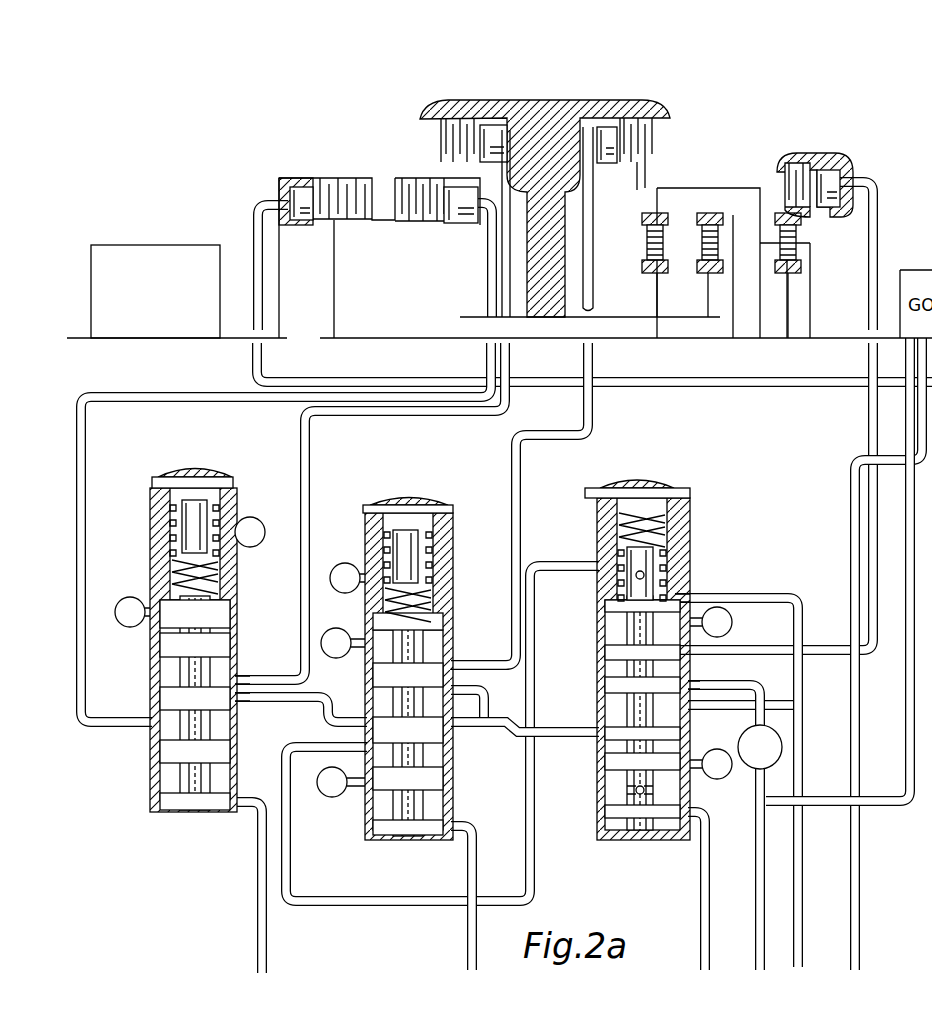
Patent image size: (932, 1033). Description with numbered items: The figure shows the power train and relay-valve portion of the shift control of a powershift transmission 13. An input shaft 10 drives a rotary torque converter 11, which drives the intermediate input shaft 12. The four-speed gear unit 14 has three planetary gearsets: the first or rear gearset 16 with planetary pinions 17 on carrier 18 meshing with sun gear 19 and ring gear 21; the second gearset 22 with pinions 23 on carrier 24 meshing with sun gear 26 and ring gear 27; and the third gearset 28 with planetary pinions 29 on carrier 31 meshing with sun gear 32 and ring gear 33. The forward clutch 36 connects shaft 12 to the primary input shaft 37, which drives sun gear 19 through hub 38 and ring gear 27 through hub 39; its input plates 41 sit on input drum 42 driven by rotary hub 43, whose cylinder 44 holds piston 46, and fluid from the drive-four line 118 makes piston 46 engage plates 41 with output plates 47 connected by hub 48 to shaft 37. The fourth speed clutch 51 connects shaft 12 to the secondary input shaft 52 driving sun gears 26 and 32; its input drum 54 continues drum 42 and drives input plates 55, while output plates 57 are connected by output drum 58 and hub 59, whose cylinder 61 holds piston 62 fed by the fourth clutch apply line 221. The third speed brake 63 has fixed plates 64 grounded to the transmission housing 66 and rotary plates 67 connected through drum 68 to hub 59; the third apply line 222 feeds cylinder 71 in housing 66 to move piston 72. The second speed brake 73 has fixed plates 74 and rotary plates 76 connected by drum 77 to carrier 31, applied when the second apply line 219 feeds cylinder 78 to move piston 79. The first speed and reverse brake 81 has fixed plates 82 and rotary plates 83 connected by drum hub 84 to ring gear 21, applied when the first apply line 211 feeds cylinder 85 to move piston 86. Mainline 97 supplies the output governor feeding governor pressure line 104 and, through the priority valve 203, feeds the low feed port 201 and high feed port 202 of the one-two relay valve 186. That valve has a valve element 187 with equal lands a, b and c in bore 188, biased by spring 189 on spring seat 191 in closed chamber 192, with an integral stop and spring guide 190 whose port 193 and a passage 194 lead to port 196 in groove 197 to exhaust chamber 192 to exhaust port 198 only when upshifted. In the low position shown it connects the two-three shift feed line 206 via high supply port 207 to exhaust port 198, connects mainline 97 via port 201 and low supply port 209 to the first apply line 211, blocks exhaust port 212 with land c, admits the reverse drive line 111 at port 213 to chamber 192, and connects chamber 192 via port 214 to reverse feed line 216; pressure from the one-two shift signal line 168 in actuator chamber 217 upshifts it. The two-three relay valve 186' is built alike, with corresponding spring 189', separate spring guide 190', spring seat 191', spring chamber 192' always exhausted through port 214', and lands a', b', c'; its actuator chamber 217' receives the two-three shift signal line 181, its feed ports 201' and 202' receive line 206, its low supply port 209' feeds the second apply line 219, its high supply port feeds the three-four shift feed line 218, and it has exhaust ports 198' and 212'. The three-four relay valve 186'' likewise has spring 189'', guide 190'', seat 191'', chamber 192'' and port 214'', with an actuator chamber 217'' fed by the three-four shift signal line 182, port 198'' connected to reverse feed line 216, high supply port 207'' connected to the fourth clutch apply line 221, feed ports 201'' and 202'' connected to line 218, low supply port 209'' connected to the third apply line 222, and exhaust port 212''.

The input shaft 10 is at (74, 342).
The torque converter 11 is at (150, 248).
The intermediate shaft 12 is at (238, 342).
The powershift transmission 13 is at (372, 132).
The 4-speed gear unit 14 is at (781, 145).
The first or rear gearset 16 is at (751, 153).
The planetary pinions 17 is at (780, 248).
The carrier 18 is at (812, 280).
The sun gear 19 is at (786, 272).
The ring gear 21 is at (802, 222).
The second gearset 22 is at (716, 176).
The pinions 23 is at (705, 256).
The carrier 24 is at (702, 213).
The sun gear 26 is at (710, 275).
The ring gear 27 is at (716, 218).
The third gearset 28 is at (672, 184).
The planetary pinions 29 is at (648, 246).
The carrier 31 is at (645, 232).
The sun gear 32 is at (645, 268).
The ring gear 33 is at (644, 216).
The forward clutch 36 is at (337, 142).
The gear unit primary input shaft 37 is at (356, 338).
The hub 38 is at (735, 330).
The hub 39 is at (732, 332).
The input plates 41 is at (322, 182).
The input drum 42 is at (343, 182).
The rotary hub 43 is at (281, 278).
The cylinder 44 is at (292, 190).
The piston 46 is at (288, 198).
The output plates 47 is at (357, 224).
The hub 48 is at (336, 272).
The fourth speed clutch 51 is at (397, 157).
The secondary input shaft 52 is at (607, 317).
The input drum 54 is at (378, 222).
The hub 55 is at (412, 222).
The output plates 57 is at (400, 186).
The output drum 58 is at (430, 182).
The hub 59 is at (475, 283).
The cylinder 61 is at (464, 224).
The piston 62 is at (455, 212).
The 3rd speed brake 63 is at (416, 106).
The fixed plates 64 is at (440, 125).
The transmission housing 66 is at (545, 114).
The rotary plates 67 is at (442, 150).
The drum 68 is at (462, 150).
The cylinder 71 is at (506, 150).
The piston 72 is at (494, 130).
The 2nd speed brake 73 is at (658, 94).
The fixed plates 74 is at (656, 130).
The rotary plates 76 is at (656, 160).
The drum 77 is at (640, 160).
The cylinder 78 is at (588, 130).
The piston 79 is at (607, 135).
The 1st speed and reverse brake 81 is at (816, 136).
The fixed plates 82 is at (790, 170).
The rotary plates 83 is at (790, 190).
The drum hub 84 is at (776, 222).
The cylinder 85 is at (832, 178).
The piston 86 is at (845, 182).
The mainline 97 is at (755, 930).
The output governor pressure line 104 is at (858, 875).
The reverse drive line 111 is at (765, 598).
The drive 4 line 118 is at (260, 305).
The 1-2 shift signal line 168 is at (702, 918).
The 2-3 shift signal line 181 is at (468, 932).
The 3-4 shift signal line 182 is at (258, 925).
The 1-2 relay valve 186 is at (622, 682).
The 2-3 relay valve 186' is at (375, 693).
The 3-4 relay valve 186'' is at (165, 666).
The valve element 187 is at (620, 652).
The bore 188 is at (612, 668).
The spring 189 is at (586, 523).
The valve bore 189' is at (353, 508).
The valve bore 189'' is at (127, 487).
The valve stop and spring guide member 190 is at (682, 558).
The valve stop and spring guide 190' is at (442, 545).
The piston 190'' is at (156, 524).
The spring seat 191 is at (649, 470).
The cap 191' is at (409, 482).
The cap 191'' is at (215, 458).
The spring chamber 192 is at (677, 549).
The spring chamber 192' is at (442, 577).
The spring 192'' is at (159, 549).
The port 193 is at (672, 562).
The passage 194 is at (672, 578).
The port 196 is at (648, 790).
The groove 197 is at (660, 800).
The exhaust port 198 is at (715, 754).
The exhaust port 198' is at (336, 791).
The port 198'' is at (266, 737).
The low feed port 201 is at (719, 674).
The low feed port 201' is at (407, 712).
The low feed port 201'' is at (286, 663).
The high feed port 202 is at (743, 707).
The high feed port 202' is at (525, 749).
The high feed port 202'' is at (272, 707).
The priority valve 203 is at (783, 748).
The 2-3 shift feed line 206 is at (585, 736).
The high supply port 207 is at (574, 779).
The high supply port 207'' is at (114, 742).
The low supply port 209 is at (776, 498).
The low supply port 209' is at (476, 645).
The low supply port 209'' is at (270, 615).
The 1st speed and reverse brake apply line 211 is at (880, 228).
The exhaust port 212 is at (740, 622).
The exhaust port 212' is at (335, 630).
The exhaust port 212'' is at (127, 596).
The port 213 is at (680, 600).
The port 214 is at (573, 584).
The exhaust port 214' is at (340, 561).
The exhaust port 214'' is at (270, 512).
The reverse feed line 216 is at (570, 566).
The actuator chamber 217 is at (574, 832).
The actuator chamber 217' is at (339, 837).
The actuator chamber 217'' is at (124, 794).
The 3-4 shift feed line 218 is at (318, 690).
The 2nd brake apply line 219 is at (591, 356).
The 4th clutch apply line 221 is at (178, 395).
The 3rd brake apply line 222 is at (512, 364).
The land a is at (595, 802).
The land a' is at (457, 802).
The land b is at (592, 708).
The land b' is at (457, 745).
The land c is at (591, 623).
The land c' is at (457, 622).